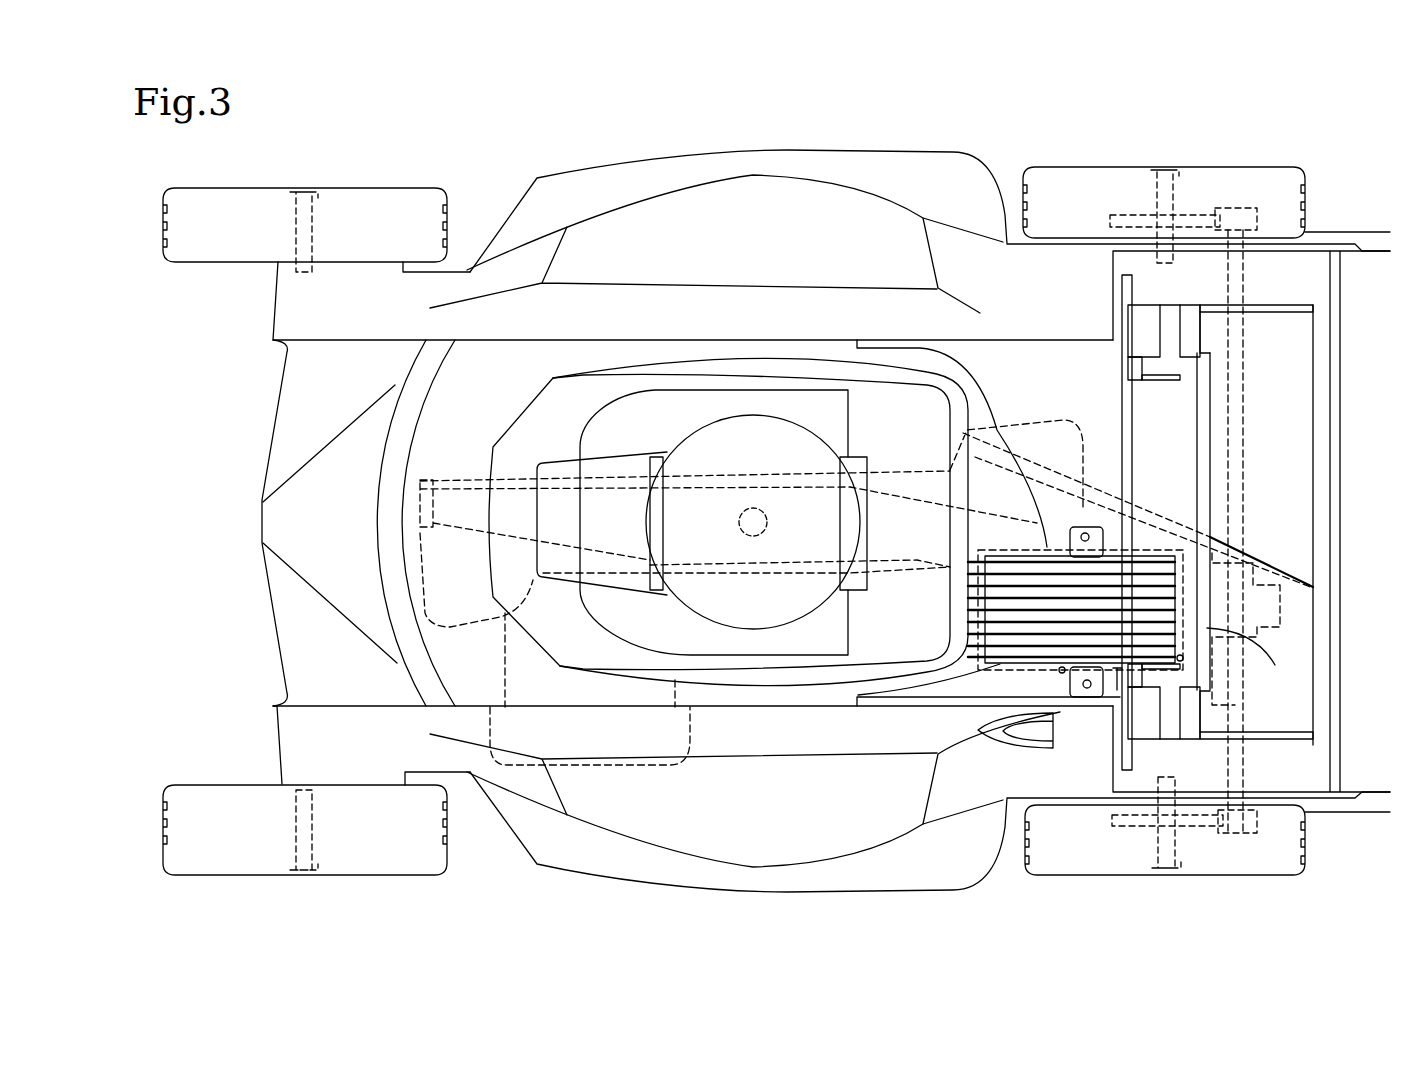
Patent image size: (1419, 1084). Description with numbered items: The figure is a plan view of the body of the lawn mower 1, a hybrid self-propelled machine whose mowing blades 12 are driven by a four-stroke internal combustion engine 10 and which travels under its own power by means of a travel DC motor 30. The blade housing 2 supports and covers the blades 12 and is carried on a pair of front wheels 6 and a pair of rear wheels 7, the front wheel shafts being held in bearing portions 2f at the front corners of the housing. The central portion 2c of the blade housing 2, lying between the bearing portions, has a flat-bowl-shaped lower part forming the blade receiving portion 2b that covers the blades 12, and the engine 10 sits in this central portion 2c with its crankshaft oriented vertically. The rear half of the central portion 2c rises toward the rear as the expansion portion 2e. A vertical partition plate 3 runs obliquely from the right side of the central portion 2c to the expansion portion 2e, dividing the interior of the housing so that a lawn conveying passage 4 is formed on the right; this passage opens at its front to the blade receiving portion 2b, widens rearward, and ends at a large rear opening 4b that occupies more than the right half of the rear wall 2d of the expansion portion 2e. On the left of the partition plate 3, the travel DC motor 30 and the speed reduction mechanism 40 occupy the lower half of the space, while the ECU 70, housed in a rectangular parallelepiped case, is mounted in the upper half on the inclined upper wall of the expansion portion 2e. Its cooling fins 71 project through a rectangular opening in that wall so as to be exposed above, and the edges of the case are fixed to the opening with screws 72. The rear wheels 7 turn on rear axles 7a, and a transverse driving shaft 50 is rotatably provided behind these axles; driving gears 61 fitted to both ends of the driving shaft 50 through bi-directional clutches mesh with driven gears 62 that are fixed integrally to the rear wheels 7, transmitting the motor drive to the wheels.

The lawn mower 1 is at (548, 144).
The blade housing 2 is at (788, 229).
The blade receiving portion 2b is at (622, 874).
The central portion 2c is at (718, 353).
The rear wall 2d is at (1280, 653).
The expansion portion 2e is at (1027, 370).
The bearing portion 2f is at (277, 278).
The vertical partition plate 3 is at (1158, 513).
The lawn conveying passage 4 is at (1095, 383).
The rear opening 4b is at (1292, 445).
The front wheel 6 is at (192, 263).
The rear wheel 7 is at (1305, 205).
The rear axle 7a is at (1150, 192).
The internal combustion engine 10 is at (637, 440).
The mowing blade 12 is at (467, 480).
The travel DC motor 30 is at (1220, 705).
The speed reduction mechanism 40 is at (1282, 600).
The driving shaft 50 is at (1247, 487).
The driving gear 61 is at (1255, 217).
The driven gear 62 is at (1107, 217).
The ECU 70 is at (1215, 690).
The cooling fin 71 is at (1075, 655).
The screw 72 is at (1060, 670).